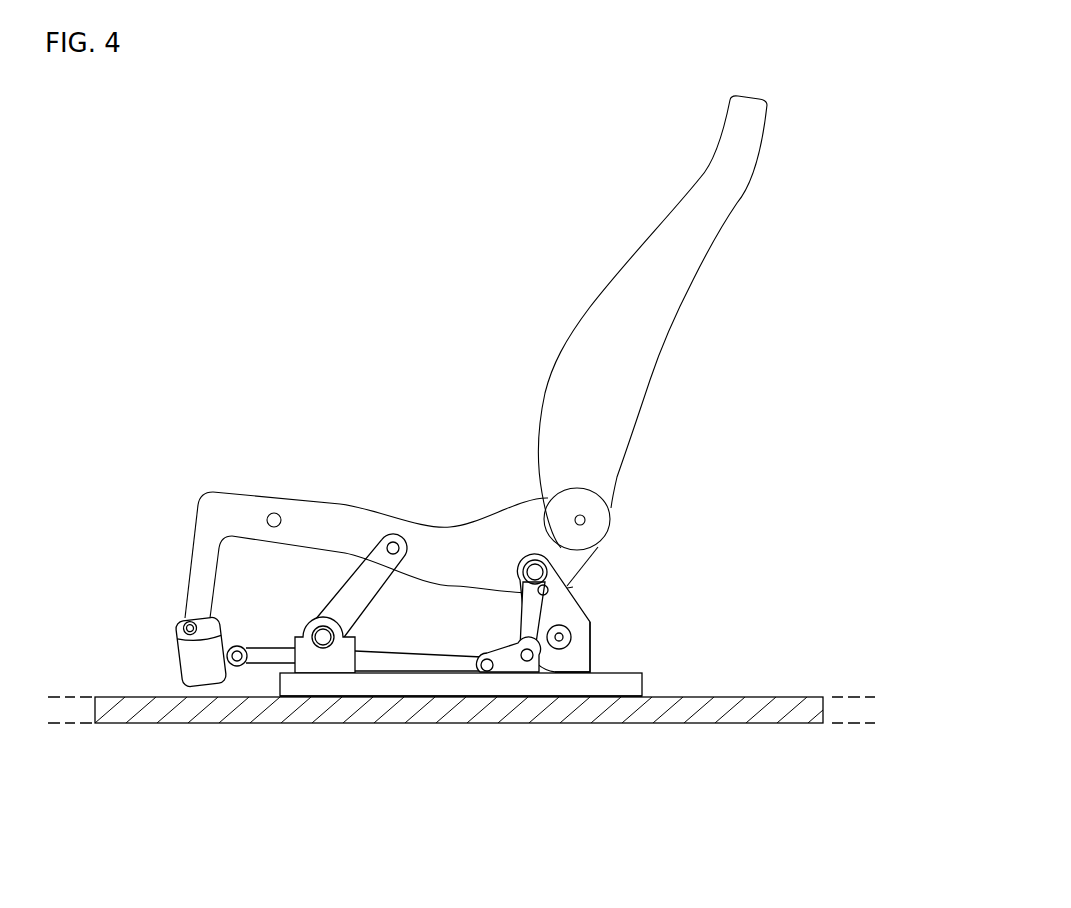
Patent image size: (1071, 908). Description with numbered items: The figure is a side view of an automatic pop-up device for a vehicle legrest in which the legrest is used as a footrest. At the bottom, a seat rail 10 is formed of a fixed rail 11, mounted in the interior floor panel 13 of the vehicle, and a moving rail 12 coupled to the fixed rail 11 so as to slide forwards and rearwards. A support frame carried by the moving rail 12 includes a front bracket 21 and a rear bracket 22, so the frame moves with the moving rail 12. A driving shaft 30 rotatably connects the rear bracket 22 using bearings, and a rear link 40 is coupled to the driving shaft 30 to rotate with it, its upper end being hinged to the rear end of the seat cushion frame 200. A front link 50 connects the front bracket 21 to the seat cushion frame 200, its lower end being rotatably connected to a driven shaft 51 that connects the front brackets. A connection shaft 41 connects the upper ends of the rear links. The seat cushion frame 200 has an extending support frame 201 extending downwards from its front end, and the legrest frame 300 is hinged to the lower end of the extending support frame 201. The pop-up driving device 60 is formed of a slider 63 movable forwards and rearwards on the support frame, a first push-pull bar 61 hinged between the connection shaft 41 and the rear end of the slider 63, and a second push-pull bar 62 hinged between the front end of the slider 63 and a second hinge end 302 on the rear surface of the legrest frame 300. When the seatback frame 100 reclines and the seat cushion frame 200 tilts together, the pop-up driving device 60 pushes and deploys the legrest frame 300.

The seatback frame 100 is at (658, 350).
The seat cushion frame 200 is at (335, 529).
The extending support frame 201 is at (192, 580).
The legrest frame 300 is at (178, 656).
The second hinge end 302 is at (238, 645).
The front link 50 is at (353, 583).
The driven shaft 51 is at (322, 626).
The connection shaft 41 is at (535, 560).
The first push-pull bar 61 is at (519, 618).
The driving shaft 30 is at (582, 627).
The rear link 40 is at (572, 634).
The rear bracket 22 is at (591, 662).
The interior floor panel 13 is at (715, 697).
The front bracket 21 is at (306, 665).
The fixed rail 11 is at (333, 686).
The moving rail 12 is at (352, 674).
The second push-pull bar 62 is at (438, 662).
The pop-up driving device 60 is at (529, 710).
The slider 63 is at (524, 663).
The seat rail 10 is at (461, 685).